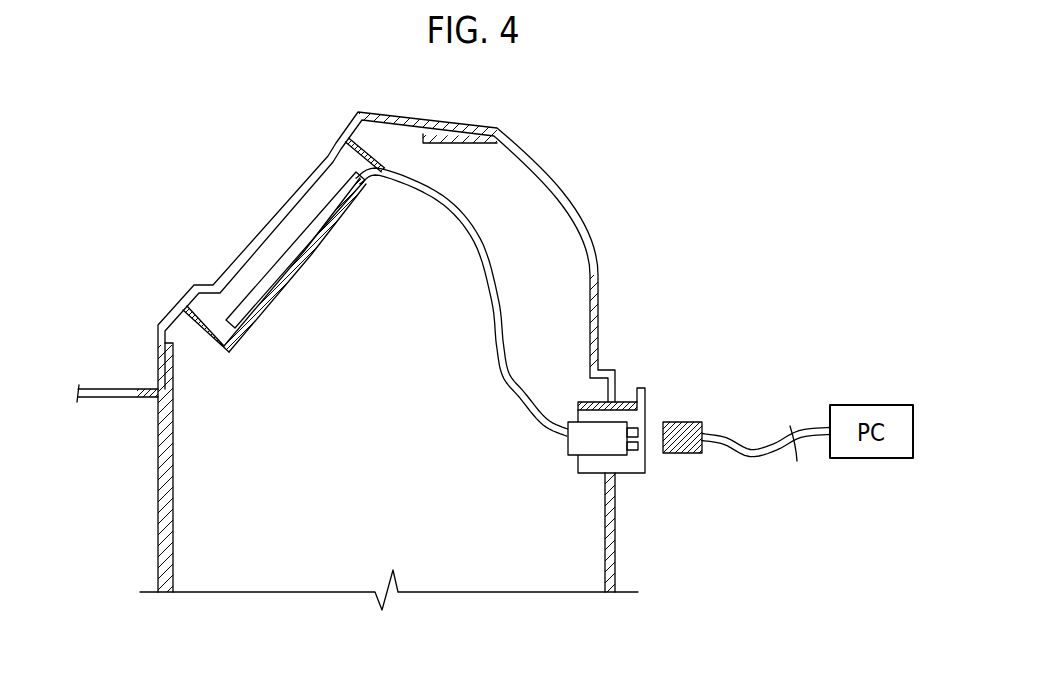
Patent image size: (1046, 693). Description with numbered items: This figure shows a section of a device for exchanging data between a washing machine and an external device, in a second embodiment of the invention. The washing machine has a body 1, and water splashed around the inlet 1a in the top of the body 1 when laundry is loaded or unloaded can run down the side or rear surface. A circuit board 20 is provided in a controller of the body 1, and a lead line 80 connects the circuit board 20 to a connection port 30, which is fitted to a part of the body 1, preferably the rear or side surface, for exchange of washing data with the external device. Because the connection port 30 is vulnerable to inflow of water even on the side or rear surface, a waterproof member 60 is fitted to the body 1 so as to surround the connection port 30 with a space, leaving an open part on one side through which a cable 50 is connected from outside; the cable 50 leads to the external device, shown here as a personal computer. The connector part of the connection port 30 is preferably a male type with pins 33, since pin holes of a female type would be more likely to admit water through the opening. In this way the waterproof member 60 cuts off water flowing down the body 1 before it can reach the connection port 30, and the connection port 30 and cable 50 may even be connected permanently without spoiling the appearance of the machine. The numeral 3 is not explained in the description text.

The body 1 is at (604, 285).
The inlet 1a is at (132, 389).
The duct 3 is at (255, 243).
The circuit board 20 is at (287, 258).
The connection port 30 is at (621, 461).
The pins 33 is at (642, 449).
The cable 50 is at (687, 422).
The waterproof member 60 is at (628, 396).
The lead line 80 is at (477, 238).